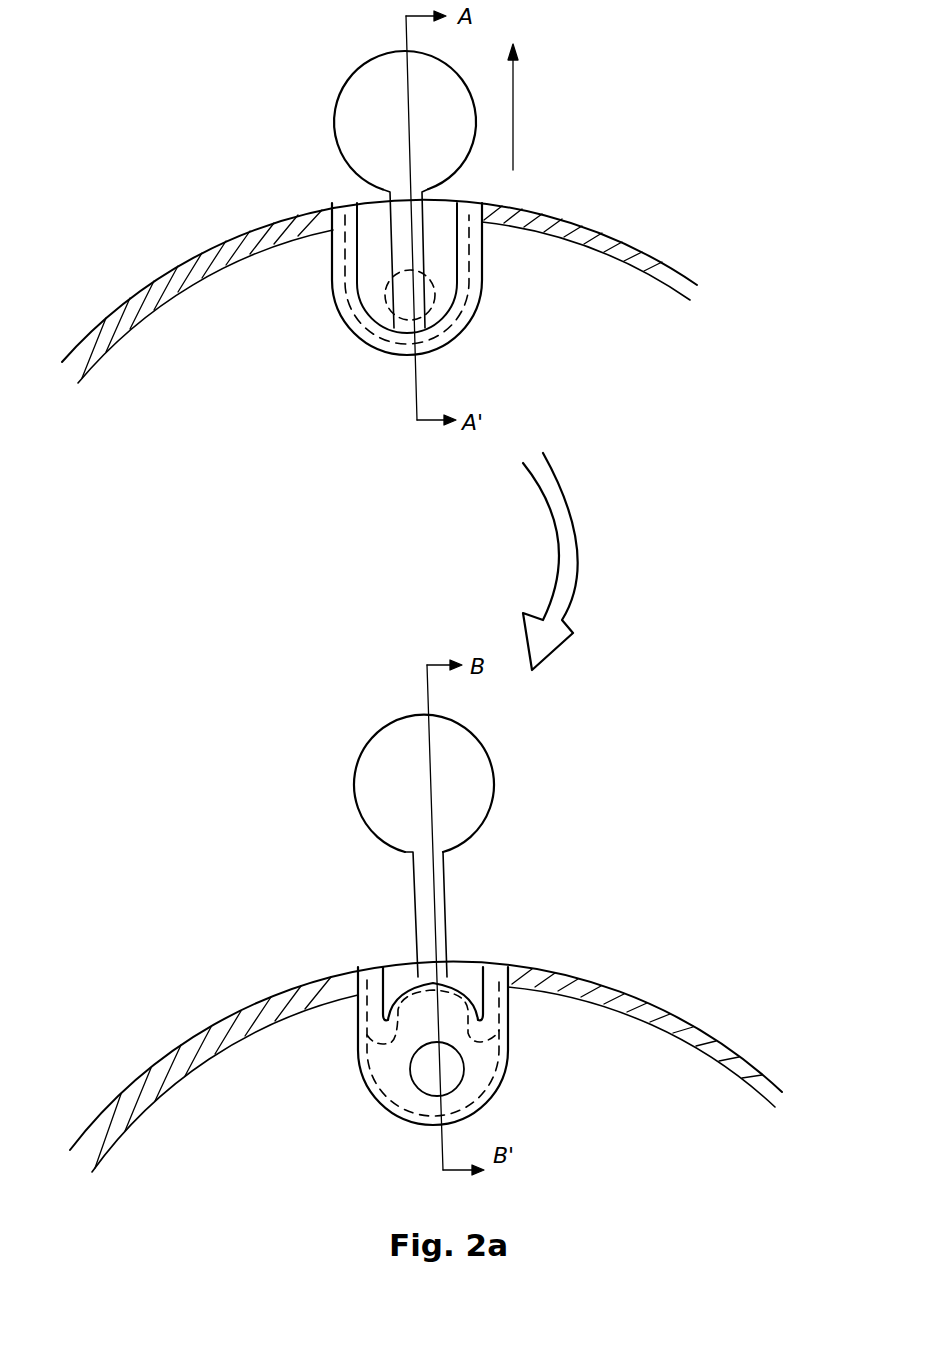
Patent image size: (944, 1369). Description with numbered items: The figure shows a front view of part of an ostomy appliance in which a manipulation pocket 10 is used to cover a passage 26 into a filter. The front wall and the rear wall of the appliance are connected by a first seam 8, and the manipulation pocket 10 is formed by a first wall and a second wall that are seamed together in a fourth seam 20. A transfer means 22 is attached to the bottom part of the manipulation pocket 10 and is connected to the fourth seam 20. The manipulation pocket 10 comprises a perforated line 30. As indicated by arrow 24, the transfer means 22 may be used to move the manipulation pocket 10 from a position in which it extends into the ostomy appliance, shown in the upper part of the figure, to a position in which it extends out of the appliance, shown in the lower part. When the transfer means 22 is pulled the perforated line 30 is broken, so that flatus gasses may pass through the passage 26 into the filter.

The first seam 8 is at (197, 263).
The manipulation pocket 10 is at (438, 232).
The fourth seam 20 is at (334, 215).
The transfer means 22 is at (428, 86).
The arrow 24 is at (520, 112).
The passage 26 is at (440, 297).
The perforated line 30 is at (455, 325).